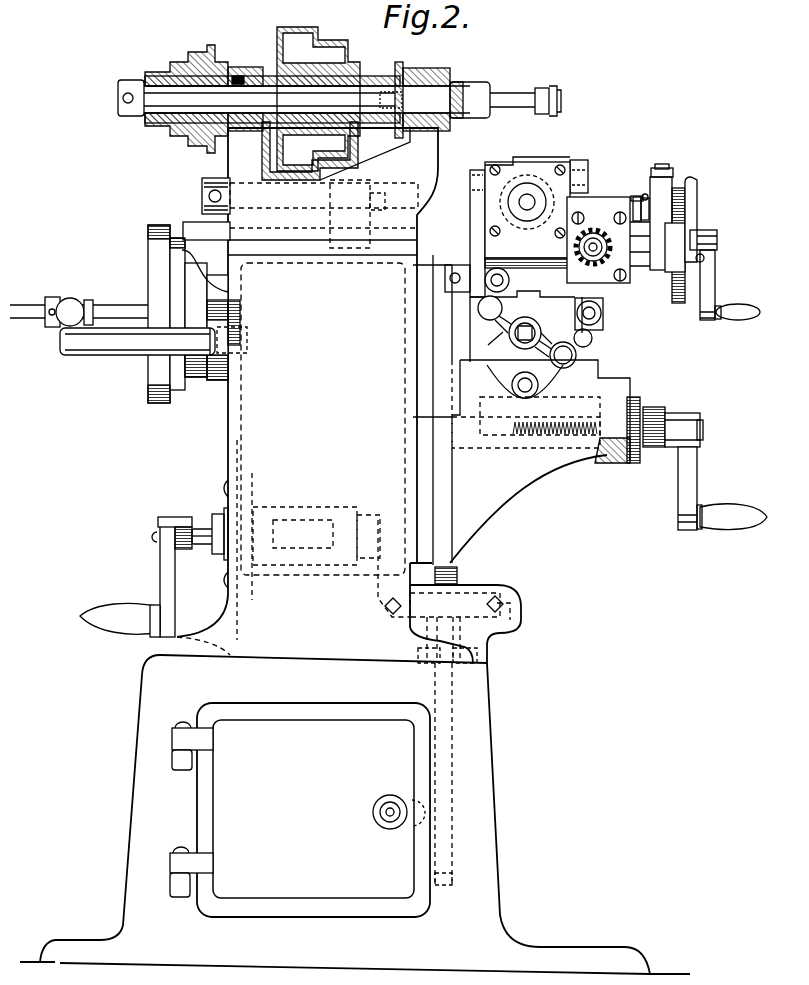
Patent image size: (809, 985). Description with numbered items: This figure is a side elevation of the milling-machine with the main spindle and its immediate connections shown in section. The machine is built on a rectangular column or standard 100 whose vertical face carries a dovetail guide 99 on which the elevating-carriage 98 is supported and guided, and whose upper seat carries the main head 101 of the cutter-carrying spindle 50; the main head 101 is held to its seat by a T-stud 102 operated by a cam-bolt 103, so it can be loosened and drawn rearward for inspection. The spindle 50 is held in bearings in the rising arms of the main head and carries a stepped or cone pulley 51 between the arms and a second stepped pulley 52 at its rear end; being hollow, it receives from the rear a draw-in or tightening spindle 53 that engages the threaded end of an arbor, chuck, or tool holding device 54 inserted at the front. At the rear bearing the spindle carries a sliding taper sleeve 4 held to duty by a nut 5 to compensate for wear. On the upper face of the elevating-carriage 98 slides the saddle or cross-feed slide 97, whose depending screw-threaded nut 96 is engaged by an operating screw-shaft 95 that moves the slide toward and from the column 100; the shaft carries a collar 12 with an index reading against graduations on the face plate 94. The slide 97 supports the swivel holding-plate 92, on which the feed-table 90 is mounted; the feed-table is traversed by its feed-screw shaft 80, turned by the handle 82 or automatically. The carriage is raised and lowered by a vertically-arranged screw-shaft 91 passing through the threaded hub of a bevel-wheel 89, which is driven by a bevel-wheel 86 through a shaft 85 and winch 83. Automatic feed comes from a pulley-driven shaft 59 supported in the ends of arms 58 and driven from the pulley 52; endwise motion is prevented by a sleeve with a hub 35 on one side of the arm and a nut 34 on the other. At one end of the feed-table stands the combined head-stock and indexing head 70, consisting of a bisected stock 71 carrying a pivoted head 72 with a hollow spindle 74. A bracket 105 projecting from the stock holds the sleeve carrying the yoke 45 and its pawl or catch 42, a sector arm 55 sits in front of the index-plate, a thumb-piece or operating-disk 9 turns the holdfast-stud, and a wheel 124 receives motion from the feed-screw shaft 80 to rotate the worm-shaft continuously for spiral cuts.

The sliding taper sleeve 4 is at (232, 124).
The nut 5 is at (236, 75).
The thumb-piece or operating-disk 9 is at (644, 198).
The collar 12 is at (652, 422).
The nut 34 is at (88, 300).
The hub 35 is at (50, 297).
The pawl or catch 42 is at (686, 181).
The yoke 45 is at (651, 217).
The spindle 50 is at (452, 92).
The stepped or cone pulley 51 is at (318, 99).
The second stepped pulley 52 is at (186, 95).
The draw-in or tightening spindle 53 is at (294, 98).
The arbor, chuck, or tool holding device 54 is at (525, 100).
The sector arm 55 is at (688, 208).
The arms 58 is at (70, 312).
The pulley-driven shaft 59 is at (128, 312).
The combined head-stock and indexing head 70 is at (527, 202).
The bisected stock 71 is at (478, 200).
The pivoted head 72 is at (527, 200).
The hollow spindle 74 is at (527, 202).
The feed-screw shaft 80 is at (520, 341).
The handle 82 is at (496, 314).
The winch 83 is at (136, 577).
The shaft 85 is at (199, 528).
The bevel-wheel 86 is at (384, 594).
The bevel-wheel 89 is at (500, 600).
The feed-table 90 is at (536, 329).
The vertically-arranged screw-shaft 91 is at (634, 197).
The swivel holding-plate 92 is at (587, 340).
The face plate 94 is at (633, 465).
The operating screw-shaft 95 is at (551, 423).
The screw-threaded nut 96 is at (526, 432).
The saddle or cross-feed slide 97 is at (590, 369).
The elevating-carriage 98 is at (528, 509).
The dovetail guide 99 is at (441, 410).
The column or standard 100 is at (500, 847).
The main head 101 is at (426, 172).
The T-stud 102 is at (327, 211).
The cam-bolt 103 is at (324, 195).
The bracket 105 is at (598, 239).
The wheel 124 is at (595, 265).